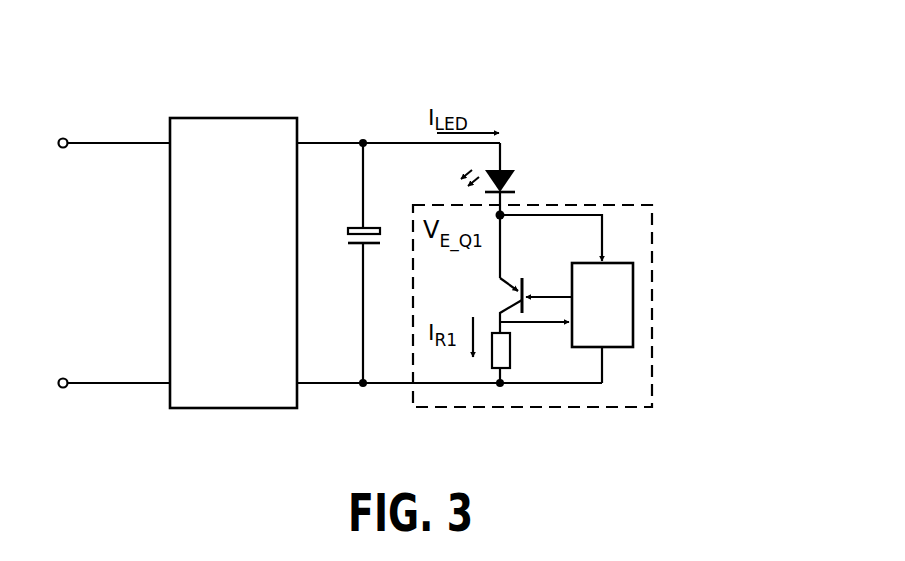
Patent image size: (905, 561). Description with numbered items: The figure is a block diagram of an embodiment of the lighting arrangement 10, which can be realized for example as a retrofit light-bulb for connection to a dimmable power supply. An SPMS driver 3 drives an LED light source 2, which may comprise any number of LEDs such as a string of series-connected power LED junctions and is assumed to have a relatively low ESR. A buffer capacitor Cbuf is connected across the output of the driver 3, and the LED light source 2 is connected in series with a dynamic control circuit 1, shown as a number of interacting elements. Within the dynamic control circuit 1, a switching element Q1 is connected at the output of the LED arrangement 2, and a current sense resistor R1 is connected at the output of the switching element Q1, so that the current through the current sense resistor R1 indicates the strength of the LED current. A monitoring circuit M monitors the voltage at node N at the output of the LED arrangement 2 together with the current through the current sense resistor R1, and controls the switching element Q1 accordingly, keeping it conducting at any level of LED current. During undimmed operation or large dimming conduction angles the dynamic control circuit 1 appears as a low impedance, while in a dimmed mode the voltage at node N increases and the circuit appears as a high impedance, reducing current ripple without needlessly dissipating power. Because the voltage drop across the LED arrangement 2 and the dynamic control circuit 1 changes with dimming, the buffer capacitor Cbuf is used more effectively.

The lighting arrangement 10 is at (630, 92).
The SPMS driver 3 is at (232, 118).
The LED light source 2 is at (507, 170).
The node N is at (505, 214).
The dynamic control circuit 1 is at (614, 205).
The switching element Q1 is at (507, 283).
The monitoring circuit M is at (612, 263).
The current sense resistor R1 is at (510, 350).
The buffer capacitor Cbuf is at (348, 231).